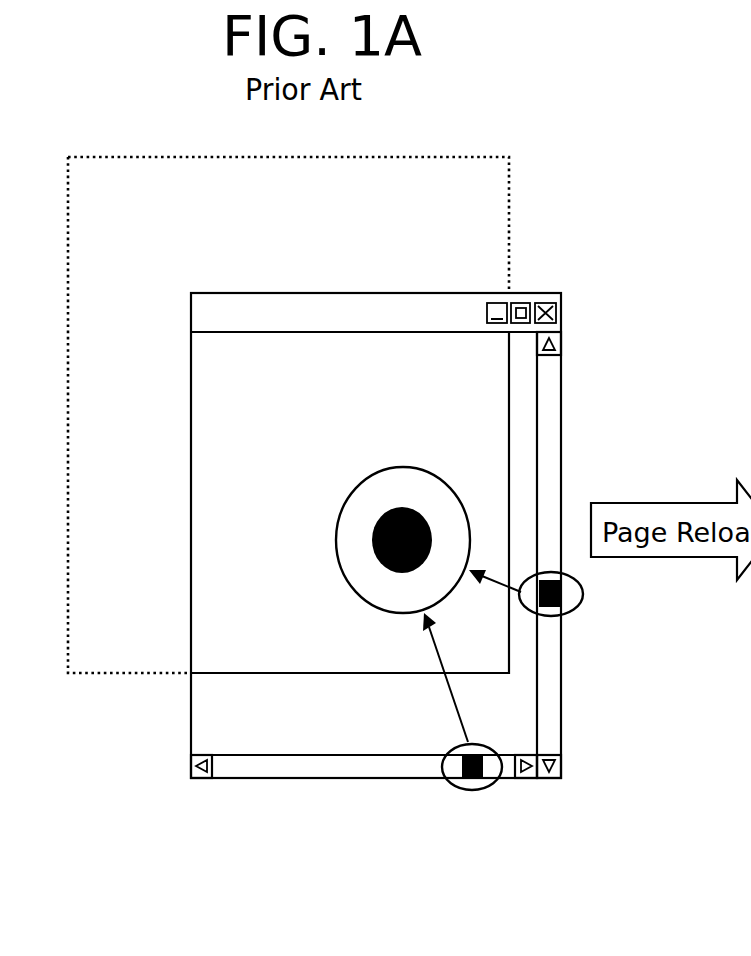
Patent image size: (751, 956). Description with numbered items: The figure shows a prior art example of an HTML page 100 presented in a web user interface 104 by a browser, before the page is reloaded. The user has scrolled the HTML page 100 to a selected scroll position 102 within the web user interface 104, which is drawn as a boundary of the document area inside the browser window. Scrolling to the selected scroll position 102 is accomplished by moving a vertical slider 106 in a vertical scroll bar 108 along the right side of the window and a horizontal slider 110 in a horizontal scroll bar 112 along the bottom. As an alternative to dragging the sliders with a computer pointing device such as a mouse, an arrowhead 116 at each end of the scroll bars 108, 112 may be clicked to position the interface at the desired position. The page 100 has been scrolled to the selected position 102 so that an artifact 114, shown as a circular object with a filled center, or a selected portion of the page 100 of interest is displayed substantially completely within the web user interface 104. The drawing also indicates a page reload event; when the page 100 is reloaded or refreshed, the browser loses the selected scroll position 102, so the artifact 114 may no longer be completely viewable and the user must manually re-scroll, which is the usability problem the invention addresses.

The HTML page 100 is at (160, 156).
The selected scroll position 102 is at (520, 678).
The web user interface 104 is at (293, 292).
The vertical slider 106 is at (563, 600).
The vertical scroll bar 108 is at (563, 437).
The horizontal slider 110 is at (459, 786).
The horizontal scroll bar 112 is at (343, 781).
The artifact 114 is at (395, 508).
The arrowhead 116 is at (565, 343).